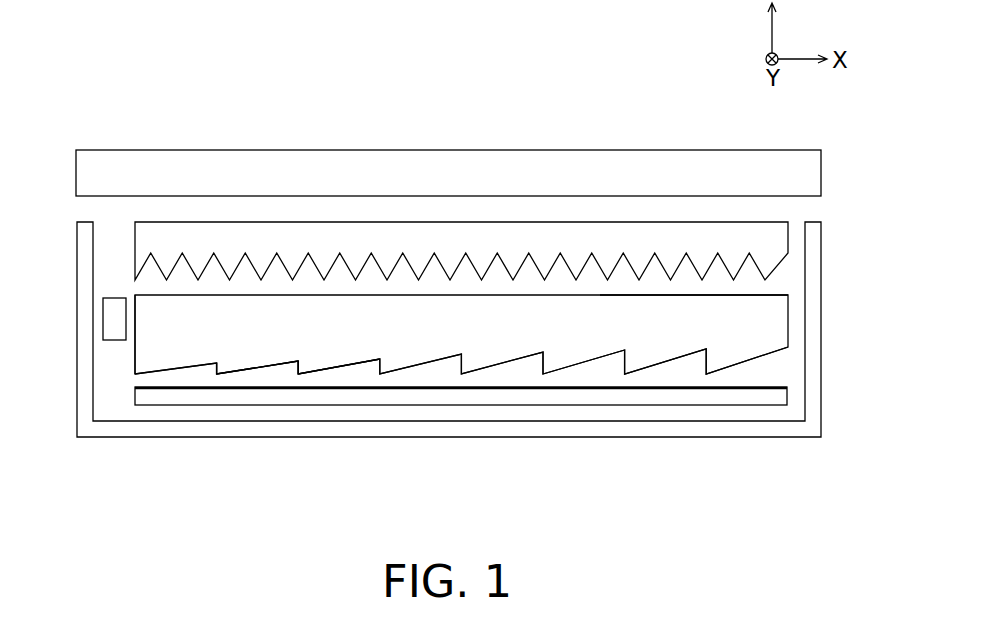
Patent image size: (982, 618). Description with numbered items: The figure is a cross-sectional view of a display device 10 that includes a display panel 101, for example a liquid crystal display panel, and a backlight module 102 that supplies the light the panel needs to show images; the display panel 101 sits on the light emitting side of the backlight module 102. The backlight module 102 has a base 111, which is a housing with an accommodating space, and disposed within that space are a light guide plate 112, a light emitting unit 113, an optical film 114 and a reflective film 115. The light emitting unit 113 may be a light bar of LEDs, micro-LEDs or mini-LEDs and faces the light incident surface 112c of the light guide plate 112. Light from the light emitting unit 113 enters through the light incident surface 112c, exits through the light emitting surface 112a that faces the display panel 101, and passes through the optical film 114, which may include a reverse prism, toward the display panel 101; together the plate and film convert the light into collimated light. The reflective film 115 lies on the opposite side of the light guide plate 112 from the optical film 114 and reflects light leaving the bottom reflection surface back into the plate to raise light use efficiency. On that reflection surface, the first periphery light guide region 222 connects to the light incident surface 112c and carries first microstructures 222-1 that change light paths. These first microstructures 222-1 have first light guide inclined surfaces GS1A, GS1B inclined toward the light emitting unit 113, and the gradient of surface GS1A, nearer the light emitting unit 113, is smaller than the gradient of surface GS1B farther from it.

The display device 10 is at (58, 113).
The display panel 101 is at (803, 165).
The backlight module 102 is at (838, 241).
The base 111 is at (812, 303).
The light guide plate 112 is at (775, 331).
The light emitting surface 112a is at (774, 290).
The light incident surface 112c is at (127, 305).
The light emitting unit 113 is at (117, 328).
The optical film 114 is at (152, 238).
The reflective film 115 is at (152, 395).
The first light guide inclined surface GS1A is at (240, 363).
The first light guide inclined surface GS1B is at (350, 359).
The first periphery light guide region 222 is at (434, 380).
The first microstructures 222-1 is at (228, 373).